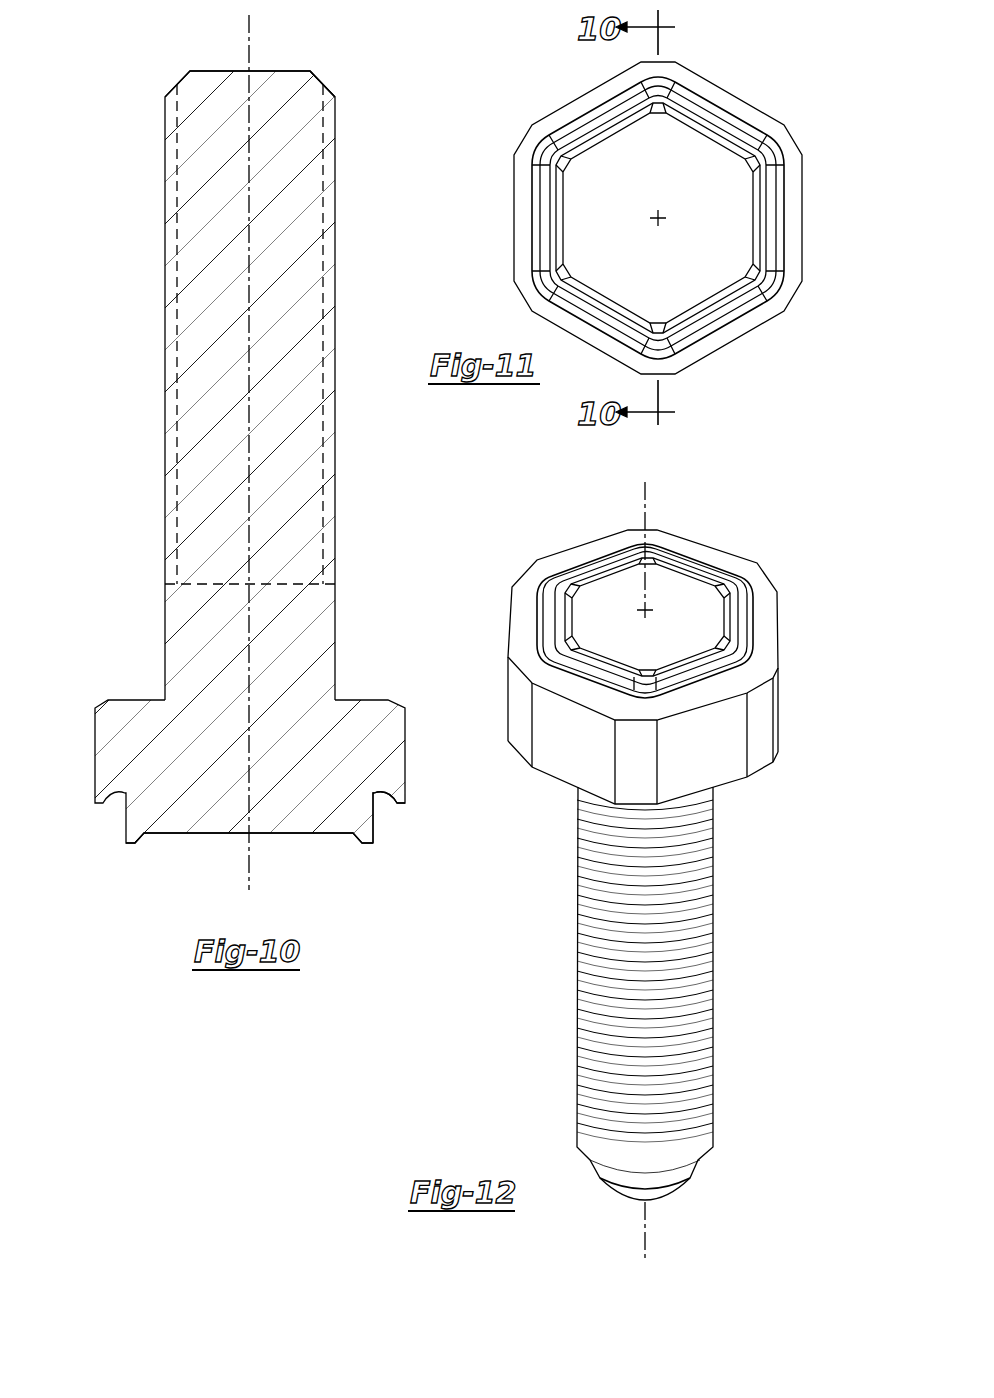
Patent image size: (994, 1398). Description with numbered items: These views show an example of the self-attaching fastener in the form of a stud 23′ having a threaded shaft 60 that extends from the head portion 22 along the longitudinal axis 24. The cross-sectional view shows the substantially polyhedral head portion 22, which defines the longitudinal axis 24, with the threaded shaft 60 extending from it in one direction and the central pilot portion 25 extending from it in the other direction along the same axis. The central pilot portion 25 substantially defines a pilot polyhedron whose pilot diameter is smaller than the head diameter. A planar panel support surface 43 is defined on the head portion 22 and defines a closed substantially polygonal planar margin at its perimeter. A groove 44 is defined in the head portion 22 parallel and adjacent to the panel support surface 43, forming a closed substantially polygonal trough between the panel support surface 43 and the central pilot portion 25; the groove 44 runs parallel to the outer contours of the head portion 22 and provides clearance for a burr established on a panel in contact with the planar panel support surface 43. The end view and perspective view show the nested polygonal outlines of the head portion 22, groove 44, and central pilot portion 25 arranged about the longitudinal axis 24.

In FIG. 10, the head portion 22 is at (95, 762).
In FIG. 11, the head portion 22 is at (803, 198).
In FIG. 12, the head portion 22 is at (783, 668).
In FIG. 10, the stud 23′ is at (318, 80).
In FIG. 10, the longitudinal axis 24 is at (252, 36).
In FIG. 11, the longitudinal axis 24 is at (665, 215).
In FIG. 12, the longitudinal axis 24 is at (650, 505).
In FIG. 10, the central pilot portion 25 is at (120, 826).
In FIG. 11, the central pilot portion 25 is at (713, 123).
In FIG. 12, the central pilot portion 25 is at (698, 558).
In FIG. 10, the planar panel support surface 43 is at (400, 808).
In FIG. 11, the planar panel support surface 43 is at (790, 287).
In FIG. 12, the planar panel support surface 43 is at (772, 612).
In FIG. 10, the groove 44 is at (382, 802).
In FIG. 11, the groove 44 is at (770, 155).
In FIG. 12, the groove 44 is at (745, 610).
In FIG. 10, the threaded shaft 60 is at (220, 205).
In FIG. 12, the threaded shaft 60 is at (712, 930).